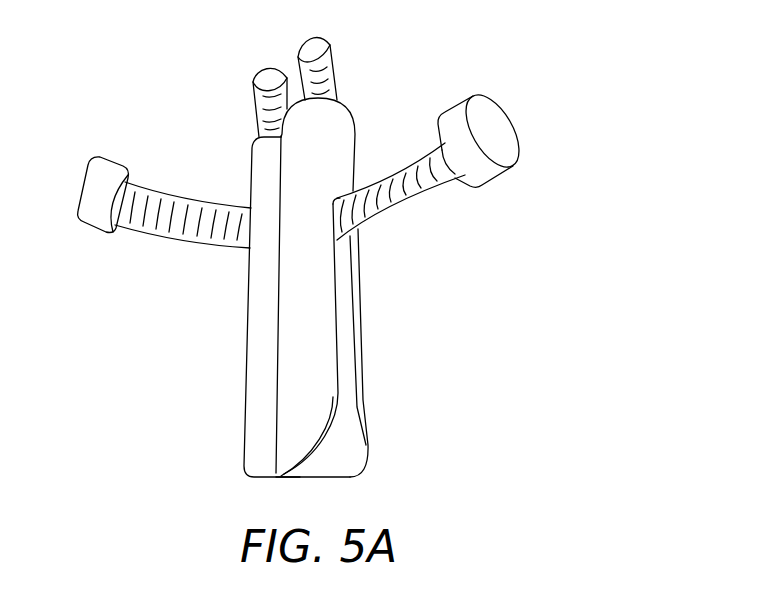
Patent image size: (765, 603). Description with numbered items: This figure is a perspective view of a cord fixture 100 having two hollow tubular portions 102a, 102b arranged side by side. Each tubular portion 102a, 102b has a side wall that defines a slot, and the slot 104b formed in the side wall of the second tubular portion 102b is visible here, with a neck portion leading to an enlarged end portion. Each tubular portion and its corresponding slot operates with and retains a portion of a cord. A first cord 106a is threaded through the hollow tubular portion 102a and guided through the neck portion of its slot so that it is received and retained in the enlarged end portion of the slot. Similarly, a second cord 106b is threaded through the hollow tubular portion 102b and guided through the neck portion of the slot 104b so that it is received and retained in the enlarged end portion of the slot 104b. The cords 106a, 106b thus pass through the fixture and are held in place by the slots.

The cord fixture 100 is at (108, 108).
The hollow tubular portion 102a is at (263, 359).
The hollow tubular portion 102b is at (313, 327).
The slot 104b is at (340, 268).
The first cord 106a is at (256, 97).
The second cord 106b is at (316, 72).